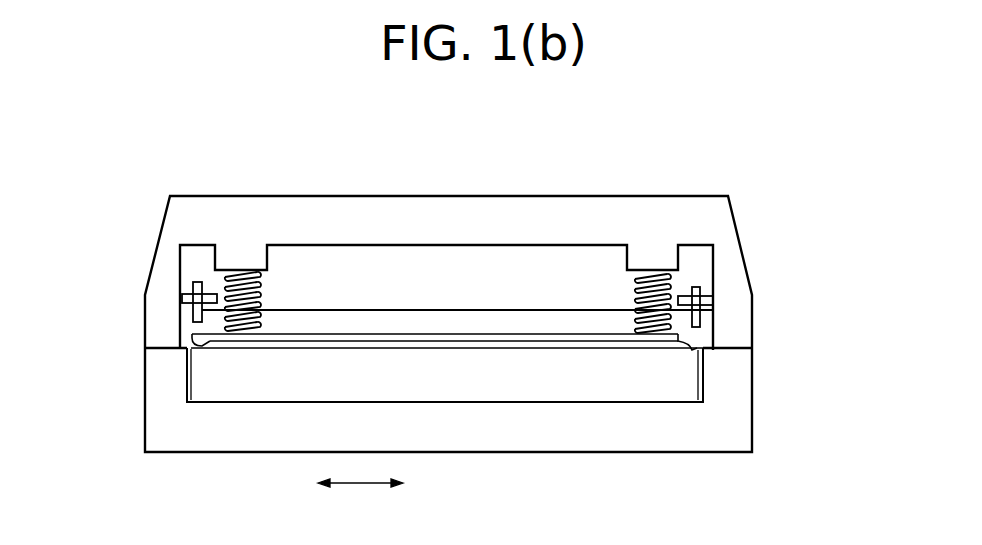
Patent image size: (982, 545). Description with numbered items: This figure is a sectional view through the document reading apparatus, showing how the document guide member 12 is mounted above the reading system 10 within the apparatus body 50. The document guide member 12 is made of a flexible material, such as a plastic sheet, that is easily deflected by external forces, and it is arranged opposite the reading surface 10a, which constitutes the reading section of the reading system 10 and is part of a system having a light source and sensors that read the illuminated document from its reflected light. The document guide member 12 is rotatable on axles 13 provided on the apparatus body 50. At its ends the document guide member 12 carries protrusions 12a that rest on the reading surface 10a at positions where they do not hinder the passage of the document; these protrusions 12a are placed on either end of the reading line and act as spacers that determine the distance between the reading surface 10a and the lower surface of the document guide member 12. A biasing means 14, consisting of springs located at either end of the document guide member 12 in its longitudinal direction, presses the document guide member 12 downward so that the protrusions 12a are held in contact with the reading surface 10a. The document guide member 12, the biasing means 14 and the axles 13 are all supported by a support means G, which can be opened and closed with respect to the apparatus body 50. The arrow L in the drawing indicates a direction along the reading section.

The apparatus body 50 is at (360, 179).
The support means G is at (296, 210).
The document reading system 10 is at (540, 392).
The reading surface 10a is at (290, 351).
The document guide member 12 is at (524, 322).
The protrusions 12a is at (200, 346).
The axles 13 is at (185, 287).
The biasing means 14 is at (238, 270).
The direction of movement L is at (360, 498).